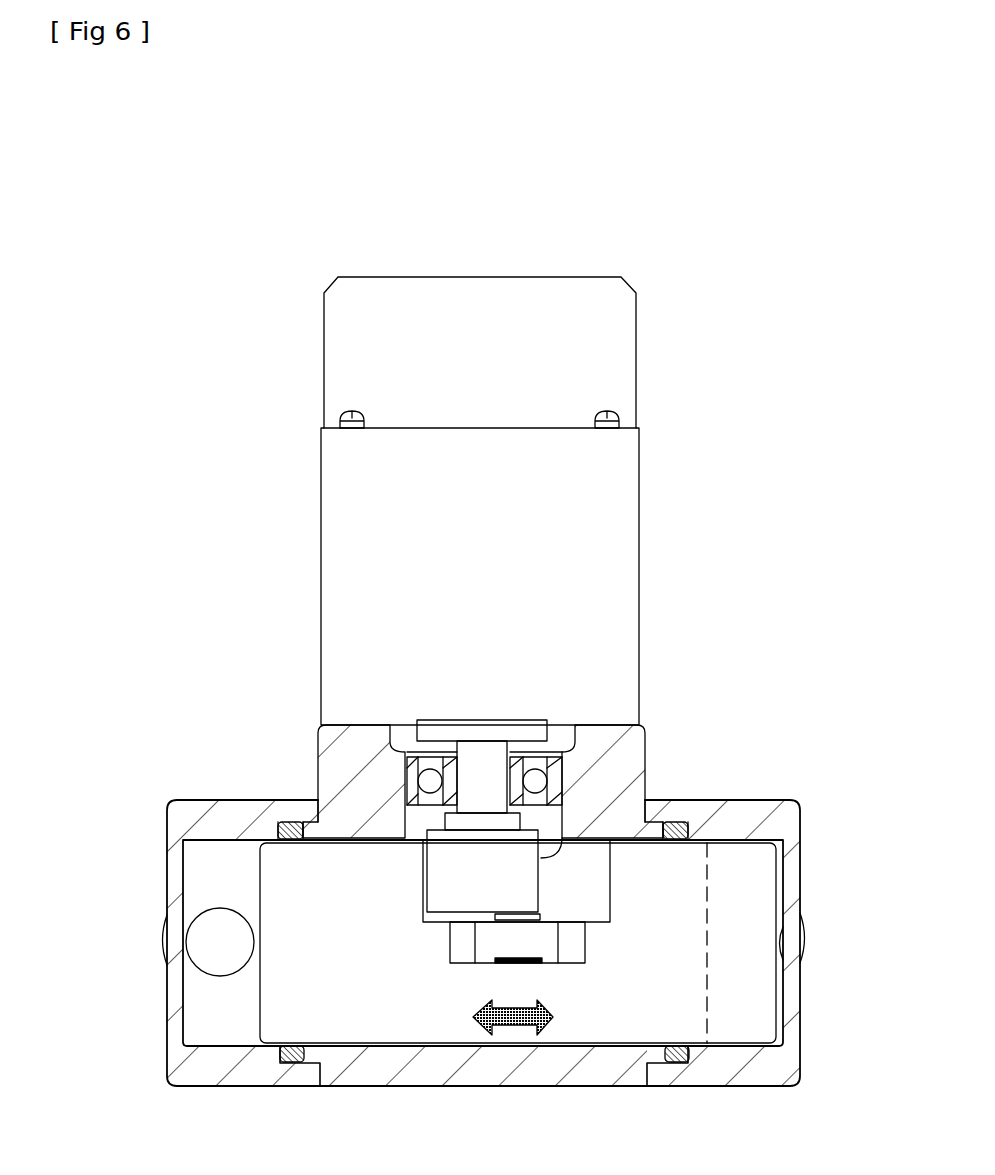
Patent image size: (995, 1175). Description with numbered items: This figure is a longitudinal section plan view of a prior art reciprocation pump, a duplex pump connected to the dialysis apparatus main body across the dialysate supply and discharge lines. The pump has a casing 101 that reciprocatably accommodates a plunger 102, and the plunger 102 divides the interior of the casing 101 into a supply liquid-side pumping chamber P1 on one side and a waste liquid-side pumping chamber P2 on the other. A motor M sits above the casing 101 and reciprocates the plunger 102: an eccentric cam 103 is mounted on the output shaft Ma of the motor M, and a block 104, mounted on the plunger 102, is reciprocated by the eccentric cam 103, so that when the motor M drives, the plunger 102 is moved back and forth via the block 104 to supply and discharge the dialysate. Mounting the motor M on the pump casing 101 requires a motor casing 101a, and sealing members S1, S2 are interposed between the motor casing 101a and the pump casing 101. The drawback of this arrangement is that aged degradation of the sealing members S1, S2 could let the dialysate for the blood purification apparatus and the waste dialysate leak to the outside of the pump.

The motor M is at (639, 518).
The casing 101 is at (165, 837).
The motor casing 101a is at (328, 745).
The output shaft Ma is at (445, 842).
The eccentric cam 103 is at (527, 912).
The block 104 is at (553, 953).
The plunger 102 is at (378, 1030).
The sealing member S1 is at (290, 1062).
The sealing member S2 is at (677, 1062).
The supply liquid-side pumping chamber P1 is at (235, 901).
The waste liquid-side pumping chamber P2 is at (757, 891).